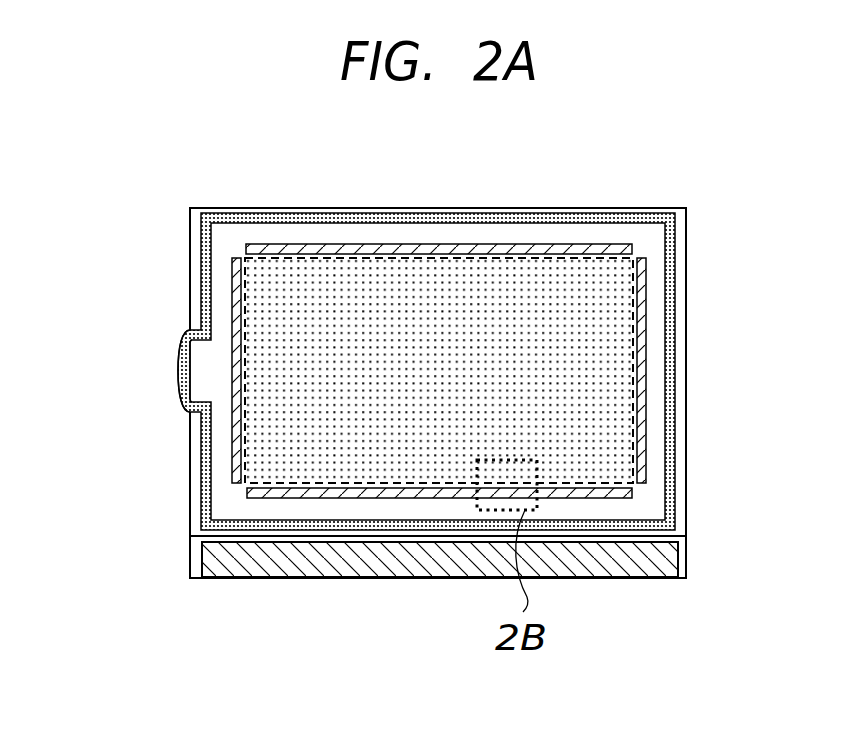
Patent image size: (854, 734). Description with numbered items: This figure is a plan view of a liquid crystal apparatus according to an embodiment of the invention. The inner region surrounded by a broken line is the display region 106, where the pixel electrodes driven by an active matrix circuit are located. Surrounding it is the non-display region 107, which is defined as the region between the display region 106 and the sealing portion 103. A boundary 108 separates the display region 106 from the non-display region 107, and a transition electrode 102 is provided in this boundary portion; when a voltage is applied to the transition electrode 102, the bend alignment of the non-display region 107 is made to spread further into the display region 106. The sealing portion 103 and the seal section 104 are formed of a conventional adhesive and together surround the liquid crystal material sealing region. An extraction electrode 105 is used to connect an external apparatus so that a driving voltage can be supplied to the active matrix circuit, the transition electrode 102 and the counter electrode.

The transition electrode 102 is at (533, 245).
The sealing portion 103 is at (428, 215).
The seal section 104 is at (182, 352).
The extraction electrode 105 is at (275, 573).
The display region 106 is at (432, 438).
The non-display region 107 is at (645, 503).
The boundary 108 is at (304, 258).